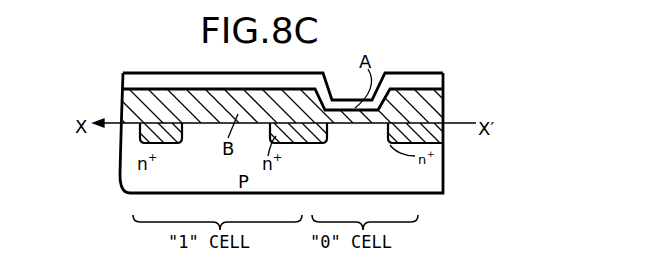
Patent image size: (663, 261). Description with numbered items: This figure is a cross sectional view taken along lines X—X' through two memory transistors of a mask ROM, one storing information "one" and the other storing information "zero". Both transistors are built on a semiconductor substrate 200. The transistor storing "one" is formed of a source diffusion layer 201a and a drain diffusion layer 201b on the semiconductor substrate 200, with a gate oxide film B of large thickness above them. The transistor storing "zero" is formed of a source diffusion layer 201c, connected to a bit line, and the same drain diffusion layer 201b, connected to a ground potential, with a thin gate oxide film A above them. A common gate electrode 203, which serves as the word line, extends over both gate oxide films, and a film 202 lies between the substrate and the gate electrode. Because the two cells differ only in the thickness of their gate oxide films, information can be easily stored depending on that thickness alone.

The semiconductor substrate 200 is at (443, 175).
The source diffusion layer 201a is at (170, 148).
The drain diffusion layer 201b is at (300, 148).
The source diffusion layer 201c is at (409, 148).
The insulating (oxide) film 202 is at (437, 110).
The gate electrode 203 is at (443, 78).